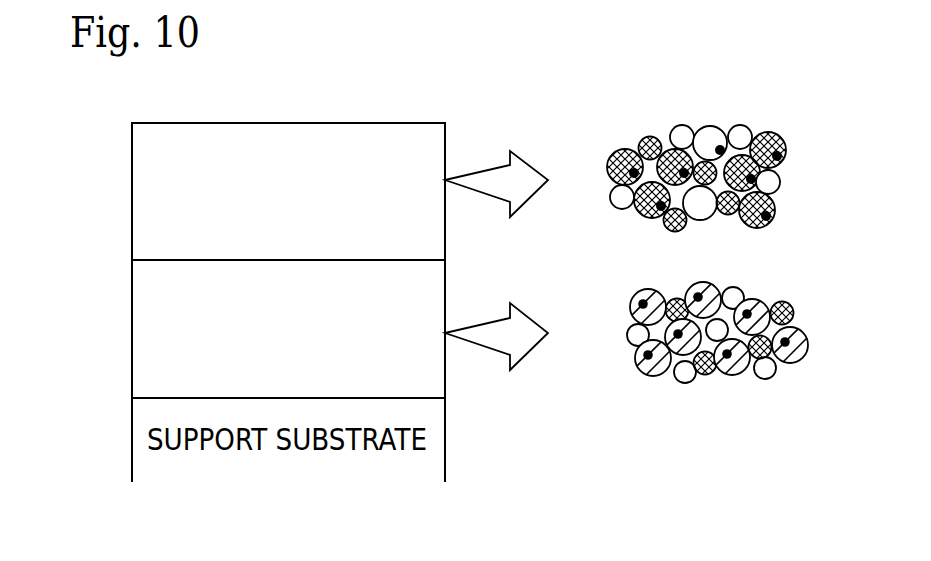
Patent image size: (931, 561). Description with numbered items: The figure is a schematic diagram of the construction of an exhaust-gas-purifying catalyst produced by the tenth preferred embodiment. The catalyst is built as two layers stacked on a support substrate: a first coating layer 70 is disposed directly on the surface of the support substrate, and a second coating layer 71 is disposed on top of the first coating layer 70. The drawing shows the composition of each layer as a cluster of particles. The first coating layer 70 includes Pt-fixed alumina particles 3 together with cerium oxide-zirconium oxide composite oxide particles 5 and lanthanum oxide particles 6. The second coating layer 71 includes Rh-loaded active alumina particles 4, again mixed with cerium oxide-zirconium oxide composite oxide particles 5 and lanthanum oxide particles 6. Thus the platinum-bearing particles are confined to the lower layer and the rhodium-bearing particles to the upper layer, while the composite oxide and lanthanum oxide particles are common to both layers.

The Pt-fixed alumina particle 3 is at (790, 363).
The Rh-loaded active alumina particle 4 is at (768, 131).
The cerium oxide-zirconium oxide composite oxide particle 5 is at (782, 301).
The lanthanum oxide particle 6 is at (780, 183).
The first coating layer 70 is at (133, 304).
The second coating layer 71 is at (133, 187).